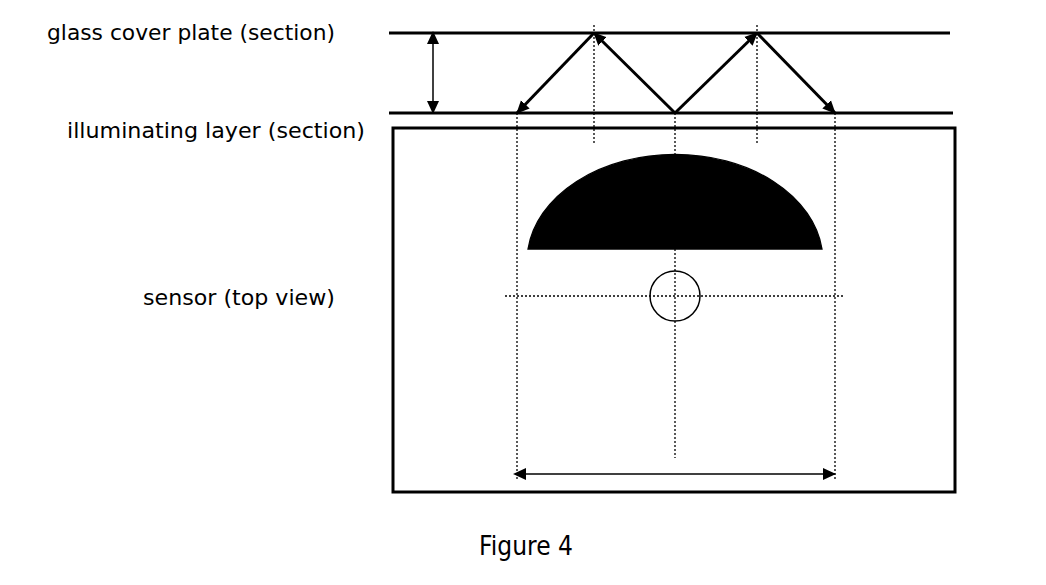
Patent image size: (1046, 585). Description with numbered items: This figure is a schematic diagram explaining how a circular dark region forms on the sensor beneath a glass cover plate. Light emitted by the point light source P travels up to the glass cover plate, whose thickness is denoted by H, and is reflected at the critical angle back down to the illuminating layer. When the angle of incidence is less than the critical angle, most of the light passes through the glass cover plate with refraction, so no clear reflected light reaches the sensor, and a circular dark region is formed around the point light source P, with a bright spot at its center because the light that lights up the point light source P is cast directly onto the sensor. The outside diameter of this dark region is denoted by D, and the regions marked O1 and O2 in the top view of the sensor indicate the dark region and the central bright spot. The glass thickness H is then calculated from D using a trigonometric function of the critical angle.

The thickness of the cover plate glass H is at (424, 73).
The point light source P is at (676, 93).
The first illuminated region O1 is at (814, 182).
The second illuminated region O2 is at (721, 269).
The dark region diameter D is at (675, 461).